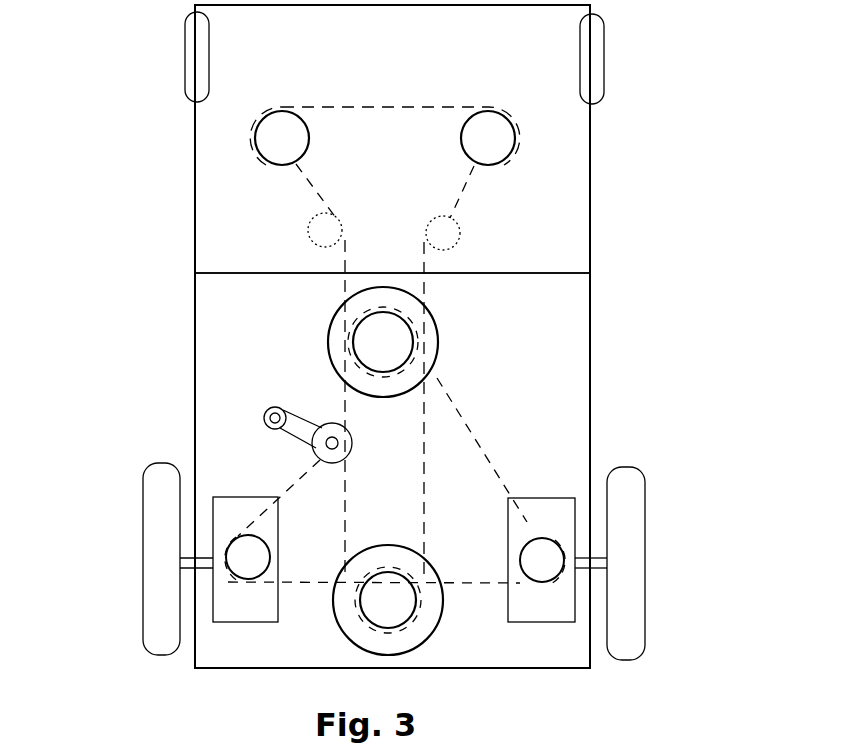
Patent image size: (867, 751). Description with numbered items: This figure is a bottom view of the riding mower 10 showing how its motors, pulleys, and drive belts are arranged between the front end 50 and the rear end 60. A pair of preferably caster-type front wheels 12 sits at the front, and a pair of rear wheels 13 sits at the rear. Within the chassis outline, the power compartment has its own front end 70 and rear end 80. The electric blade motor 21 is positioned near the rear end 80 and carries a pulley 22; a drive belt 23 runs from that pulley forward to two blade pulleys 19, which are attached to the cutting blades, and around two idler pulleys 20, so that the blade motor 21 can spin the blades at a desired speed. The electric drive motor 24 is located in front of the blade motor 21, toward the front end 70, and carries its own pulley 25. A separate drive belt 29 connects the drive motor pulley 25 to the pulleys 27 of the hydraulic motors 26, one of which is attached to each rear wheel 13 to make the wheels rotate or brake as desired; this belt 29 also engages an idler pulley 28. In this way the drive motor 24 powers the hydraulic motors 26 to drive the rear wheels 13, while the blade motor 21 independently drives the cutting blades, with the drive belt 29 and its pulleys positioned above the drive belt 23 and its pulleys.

The riding mower 10 is at (705, 222).
The front wheels 12 is at (186, 66).
The rear wheels 13 is at (156, 556).
The deck blade pulley 19 is at (480, 138).
The deck idler pulley 20 is at (446, 234).
The electric blade motor 21 is at (426, 634).
The pulley 22 is at (378, 608).
The drive belt 23 is at (298, 202).
The electric drive motor 24 is at (430, 332).
The pulley 25 is at (395, 344).
The hydraulic motors 26 is at (248, 498).
The pulleys 27 is at (258, 560).
The idler pulley 28 is at (328, 428).
The drive belt 29 is at (496, 436).
The front end 50 is at (163, 15).
The rear end 60 is at (150, 696).
The front end 70 is at (272, 276).
The rear end 80 is at (274, 667).